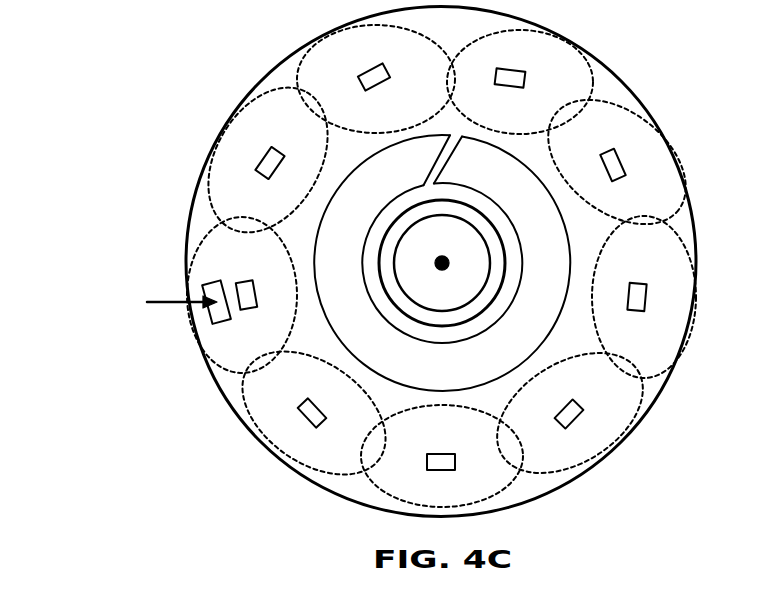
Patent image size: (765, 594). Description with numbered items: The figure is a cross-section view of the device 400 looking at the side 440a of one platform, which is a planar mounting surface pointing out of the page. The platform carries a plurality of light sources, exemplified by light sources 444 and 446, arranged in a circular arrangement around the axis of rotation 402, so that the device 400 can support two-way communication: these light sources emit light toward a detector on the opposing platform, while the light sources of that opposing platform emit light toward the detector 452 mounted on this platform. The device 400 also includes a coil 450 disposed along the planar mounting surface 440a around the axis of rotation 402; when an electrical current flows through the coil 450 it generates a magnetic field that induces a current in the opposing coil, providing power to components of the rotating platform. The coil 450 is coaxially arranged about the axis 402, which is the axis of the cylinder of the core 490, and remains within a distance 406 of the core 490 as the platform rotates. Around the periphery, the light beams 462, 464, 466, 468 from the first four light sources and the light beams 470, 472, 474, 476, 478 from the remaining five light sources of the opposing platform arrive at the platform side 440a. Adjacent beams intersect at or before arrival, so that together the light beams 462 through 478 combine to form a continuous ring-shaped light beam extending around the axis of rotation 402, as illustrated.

The device 400 is at (82, 81).
The axis of rotation 402 is at (440, 258).
The distance 406 is at (393, 263).
The side of platform 440a is at (606, 82).
The light source 444 is at (244, 281).
The light source 446 is at (300, 410).
The coil 450 is at (458, 377).
The detector 452 is at (160, 303).
The light beam 462 is at (323, 161).
The light beam 464 is at (228, 321).
The light beam 466 is at (314, 413).
The light beam 468 is at (500, 490).
The light beam 470 is at (632, 425).
The light beam 472 is at (667, 365).
The light beam 474 is at (683, 207).
The light beam 476 is at (518, 133).
The light beam 478 is at (372, 128).
The core 490 is at (458, 300).